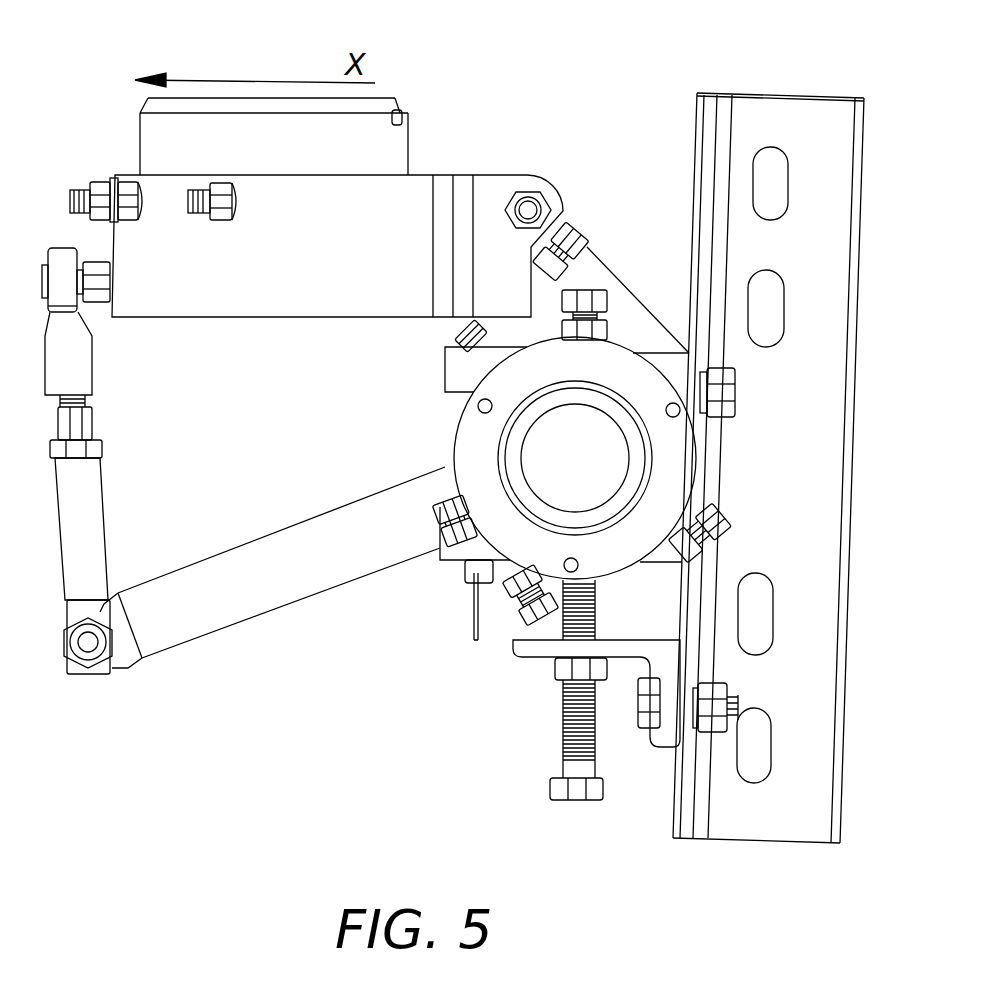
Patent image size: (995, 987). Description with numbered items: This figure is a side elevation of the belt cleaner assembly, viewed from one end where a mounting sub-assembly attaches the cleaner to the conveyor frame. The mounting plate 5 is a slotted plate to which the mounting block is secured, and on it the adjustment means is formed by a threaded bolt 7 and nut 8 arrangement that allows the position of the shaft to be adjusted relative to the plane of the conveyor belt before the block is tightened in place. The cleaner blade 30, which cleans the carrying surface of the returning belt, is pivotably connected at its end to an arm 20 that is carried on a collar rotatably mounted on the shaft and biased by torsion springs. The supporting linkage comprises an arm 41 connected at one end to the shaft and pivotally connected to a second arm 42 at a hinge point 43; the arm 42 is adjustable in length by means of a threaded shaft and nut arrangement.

The mounting plate 5 is at (793, 108).
The threaded bolt 7 is at (560, 737).
The nut 8 is at (558, 665).
The arm 20 is at (588, 262).
The cleaner blade 30 is at (150, 136).
The arm 41 is at (257, 602).
The arm 42 is at (88, 500).
The hinge point 43 is at (88, 645).